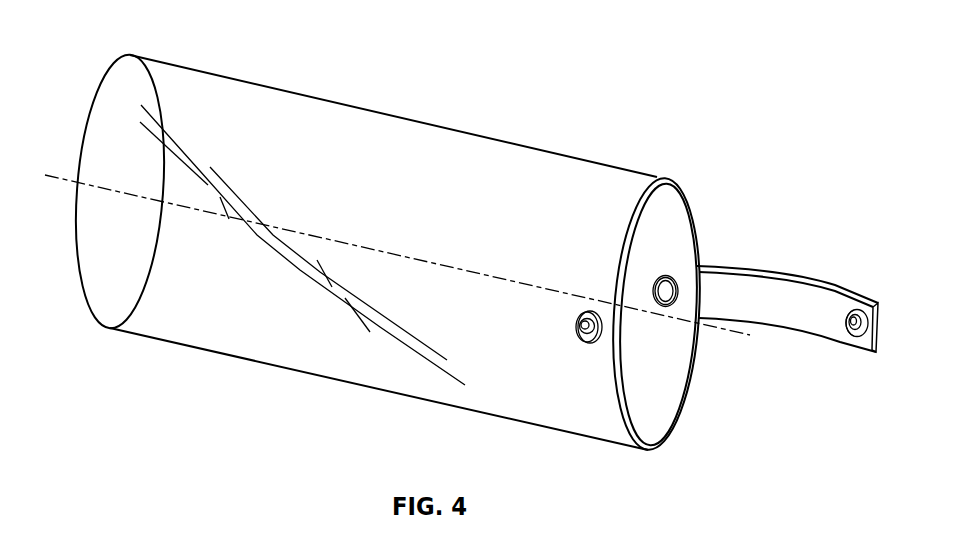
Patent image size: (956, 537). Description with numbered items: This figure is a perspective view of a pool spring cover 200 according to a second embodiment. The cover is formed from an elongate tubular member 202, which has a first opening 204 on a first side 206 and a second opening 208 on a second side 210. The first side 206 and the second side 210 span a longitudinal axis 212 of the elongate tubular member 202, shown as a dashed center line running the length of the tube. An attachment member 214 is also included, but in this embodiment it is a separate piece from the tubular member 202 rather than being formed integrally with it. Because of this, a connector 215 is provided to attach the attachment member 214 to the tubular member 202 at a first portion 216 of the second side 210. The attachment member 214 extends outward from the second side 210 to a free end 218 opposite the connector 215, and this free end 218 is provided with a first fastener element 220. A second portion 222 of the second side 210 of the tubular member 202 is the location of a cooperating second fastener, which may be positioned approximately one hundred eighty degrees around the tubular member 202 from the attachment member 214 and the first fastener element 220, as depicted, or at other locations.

The pool spring cover 200 is at (649, 44).
The elongate tubular member 202 is at (475, 140).
The first opening 204 is at (113, 93).
The first side 206 is at (249, 80).
The second opening 208 is at (658, 417).
The second side 210 is at (598, 430).
The longitudinal axis 212 is at (375, 248).
The attachment member 214 is at (797, 311).
The connector 215 is at (679, 290).
The first portion 216 is at (697, 232).
The free end 218 is at (842, 285).
The first fastener element 220 is at (857, 342).
The second portion 222 is at (607, 348).